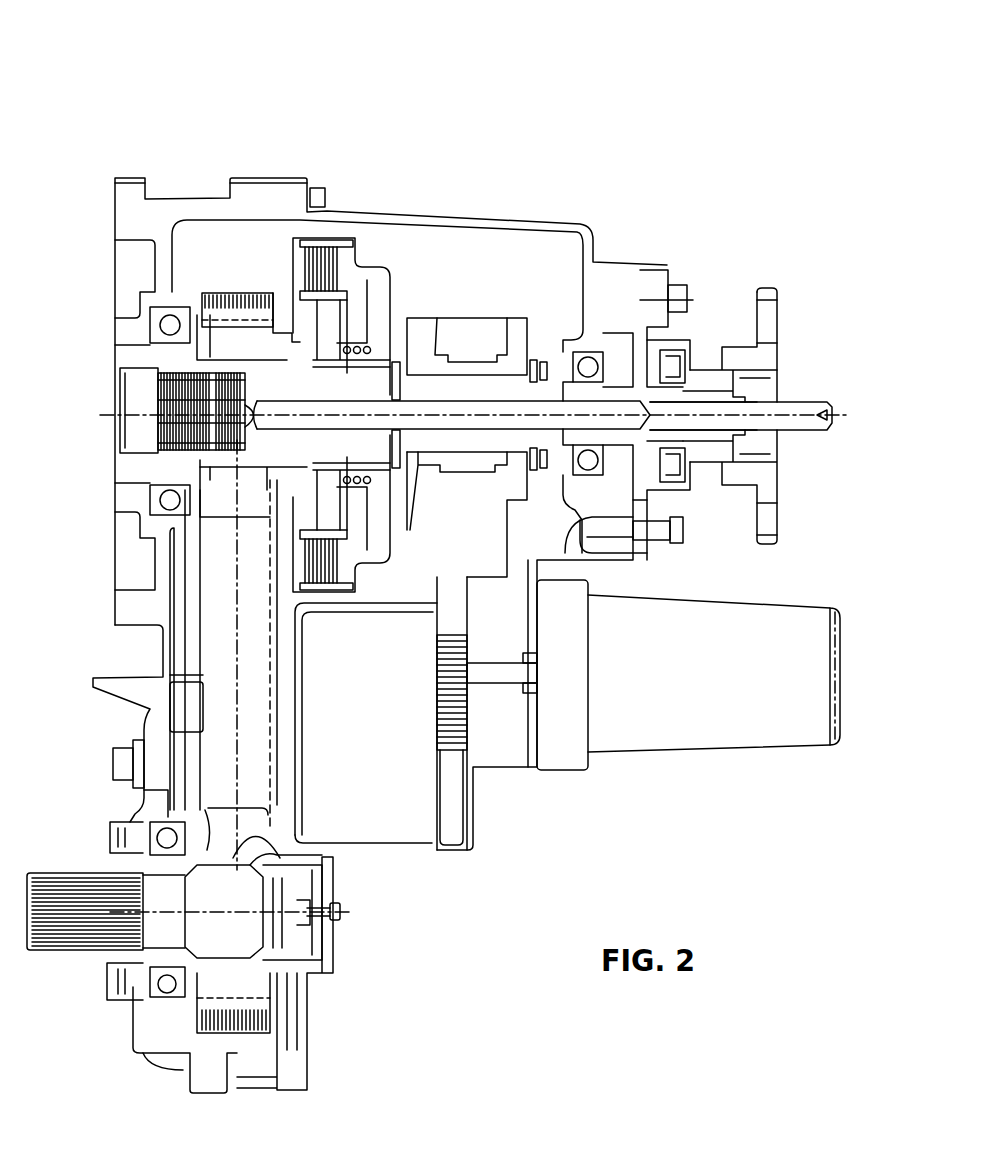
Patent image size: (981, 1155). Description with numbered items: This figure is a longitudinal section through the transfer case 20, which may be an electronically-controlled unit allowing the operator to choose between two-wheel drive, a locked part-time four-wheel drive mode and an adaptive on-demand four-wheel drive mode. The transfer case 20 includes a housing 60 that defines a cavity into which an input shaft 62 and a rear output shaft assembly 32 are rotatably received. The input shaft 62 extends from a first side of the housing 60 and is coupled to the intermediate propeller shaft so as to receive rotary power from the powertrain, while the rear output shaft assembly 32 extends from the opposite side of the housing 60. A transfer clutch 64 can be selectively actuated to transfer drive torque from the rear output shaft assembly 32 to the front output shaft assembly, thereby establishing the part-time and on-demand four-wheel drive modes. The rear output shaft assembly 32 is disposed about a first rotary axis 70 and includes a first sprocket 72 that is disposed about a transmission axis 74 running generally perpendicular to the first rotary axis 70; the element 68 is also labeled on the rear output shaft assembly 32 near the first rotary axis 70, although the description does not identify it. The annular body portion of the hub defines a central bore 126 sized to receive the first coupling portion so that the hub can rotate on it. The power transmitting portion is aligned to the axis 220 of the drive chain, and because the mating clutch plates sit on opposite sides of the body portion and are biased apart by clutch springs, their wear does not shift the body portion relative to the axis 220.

The transfer case 20 is at (611, 74).
The rear output shaft assembly 32 is at (657, 425).
The housing 60 is at (157, 197).
The input shaft 62 is at (177, 360).
The transfer clutch 64 is at (360, 262).
The output shaft 68 is at (807, 402).
The first rotary axis 70 is at (787, 400).
The first sprocket 72 is at (215, 487).
The transmission axis 74 is at (238, 628).
The central bore 126 is at (445, 688).
The axis of the drive chain 220 is at (237, 827).